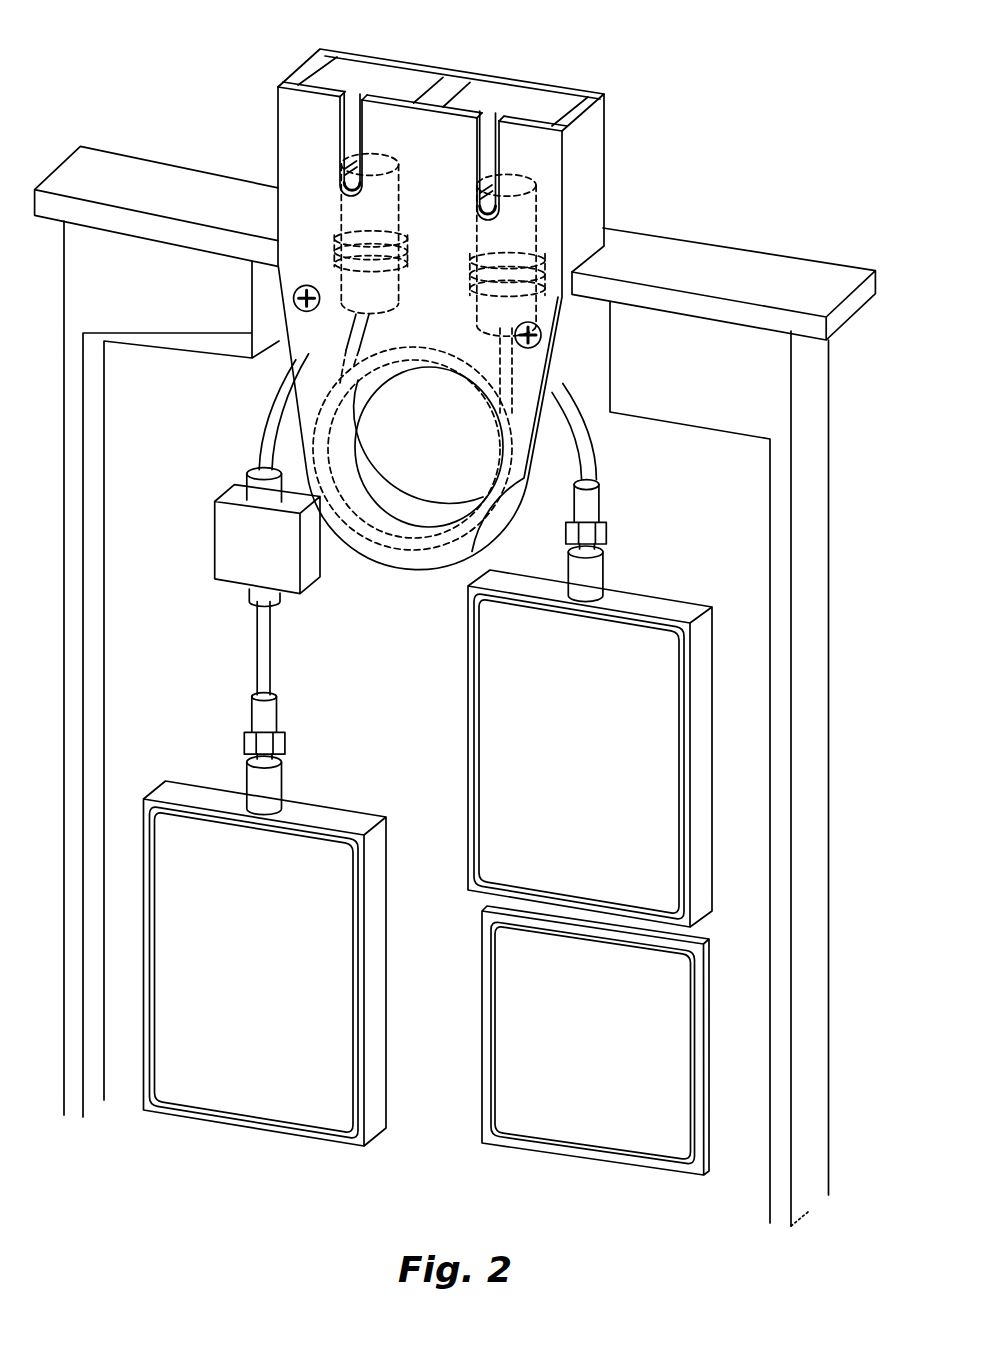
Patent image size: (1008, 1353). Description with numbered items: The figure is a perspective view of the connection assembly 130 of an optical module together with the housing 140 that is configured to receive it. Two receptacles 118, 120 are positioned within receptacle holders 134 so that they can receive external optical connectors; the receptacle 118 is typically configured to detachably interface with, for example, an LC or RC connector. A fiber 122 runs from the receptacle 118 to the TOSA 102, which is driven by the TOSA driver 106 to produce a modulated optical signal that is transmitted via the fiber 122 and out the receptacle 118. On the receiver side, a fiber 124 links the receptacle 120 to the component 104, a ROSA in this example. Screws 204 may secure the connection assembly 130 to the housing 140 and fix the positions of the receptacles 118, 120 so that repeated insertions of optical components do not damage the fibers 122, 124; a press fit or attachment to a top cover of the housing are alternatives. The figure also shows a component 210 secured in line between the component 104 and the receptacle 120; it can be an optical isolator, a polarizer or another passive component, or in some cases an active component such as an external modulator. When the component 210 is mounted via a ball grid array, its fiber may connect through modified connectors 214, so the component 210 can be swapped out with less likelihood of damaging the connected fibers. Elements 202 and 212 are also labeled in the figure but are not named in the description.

The TOSA 102 is at (590, 703).
The ROSA 104 is at (265, 874).
The TOSA driver 106 is at (595, 1040).
The receptacle 118 is at (489, 209).
The receptacle 120 is at (352, 189).
The fiber 122 is at (595, 467).
The fiber 124 is at (264, 429).
The connection assembly 130 is at (264, 146).
The receptacle holders 134 is at (582, 179).
The housing 140 is at (810, 424).
The connector fitting 202 is at (334, 267).
The screws 204 is at (294, 295).
The component 210 is at (213, 536).
The outlet port 212 is at (244, 593).
The modified connectors 214 is at (248, 485).